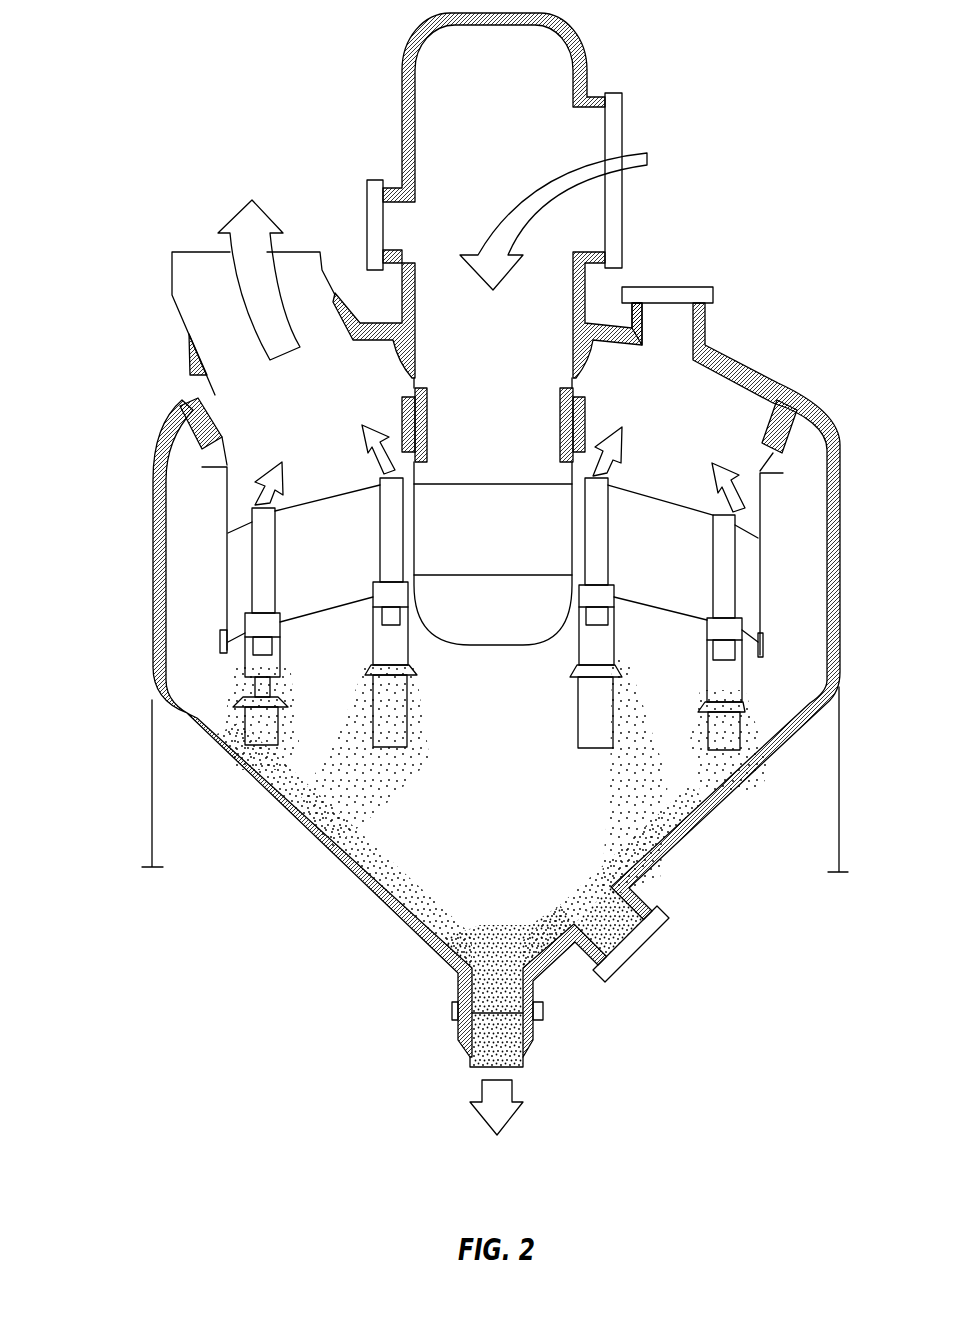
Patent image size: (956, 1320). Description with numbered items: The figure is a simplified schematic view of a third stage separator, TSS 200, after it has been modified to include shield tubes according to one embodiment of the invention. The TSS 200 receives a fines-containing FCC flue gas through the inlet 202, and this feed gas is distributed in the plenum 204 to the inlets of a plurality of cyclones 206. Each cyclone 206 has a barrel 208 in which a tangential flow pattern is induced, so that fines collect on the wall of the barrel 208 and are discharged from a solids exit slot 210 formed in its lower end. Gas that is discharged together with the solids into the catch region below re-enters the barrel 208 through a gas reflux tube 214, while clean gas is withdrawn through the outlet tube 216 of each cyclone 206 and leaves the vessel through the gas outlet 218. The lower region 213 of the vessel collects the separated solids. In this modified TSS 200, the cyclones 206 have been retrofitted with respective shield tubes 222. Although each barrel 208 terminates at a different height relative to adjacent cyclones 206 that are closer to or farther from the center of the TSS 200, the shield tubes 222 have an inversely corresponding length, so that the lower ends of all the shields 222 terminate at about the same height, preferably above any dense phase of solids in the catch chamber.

The third stage separator 200 is at (157, 367).
The inlet 202 is at (590, 192).
The plenum 204 is at (348, 574).
The cyclone 206 is at (731, 583).
The barrel 208 is at (420, 617).
The solids exit slot 210 is at (373, 658).
The lower chamber 213 is at (519, 847).
The gas reflux tube 214 is at (265, 687).
The outlet tube 216 is at (392, 552).
The gas outlet 218 is at (205, 268).
The shield tube 222 is at (597, 708).